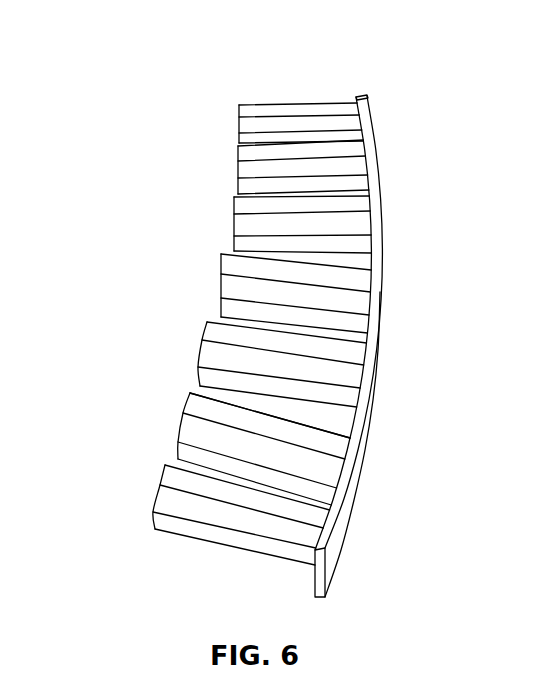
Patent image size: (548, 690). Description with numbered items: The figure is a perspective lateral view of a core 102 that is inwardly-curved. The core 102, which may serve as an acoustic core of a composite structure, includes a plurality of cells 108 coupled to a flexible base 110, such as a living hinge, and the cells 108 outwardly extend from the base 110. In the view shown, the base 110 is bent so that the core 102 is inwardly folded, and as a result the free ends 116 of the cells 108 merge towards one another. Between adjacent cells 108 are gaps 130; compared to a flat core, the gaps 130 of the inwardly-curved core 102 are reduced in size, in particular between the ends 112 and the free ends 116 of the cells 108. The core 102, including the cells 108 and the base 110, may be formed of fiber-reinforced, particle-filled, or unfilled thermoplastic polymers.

The core 102 is at (171, 131).
The cells 108 is at (314, 108).
The flexible base 110 is at (376, 289).
The ends 112 is at (361, 159).
The free ends 116 is at (238, 128).
The gaps 130 is at (238, 191).